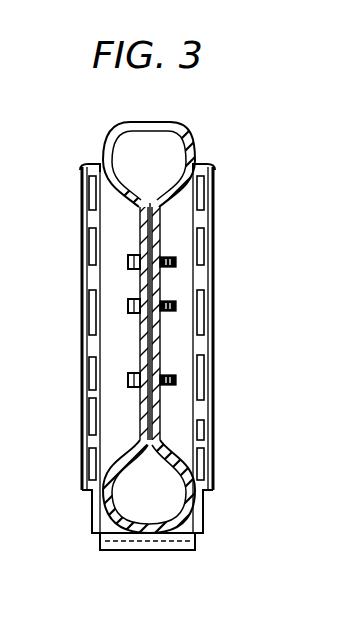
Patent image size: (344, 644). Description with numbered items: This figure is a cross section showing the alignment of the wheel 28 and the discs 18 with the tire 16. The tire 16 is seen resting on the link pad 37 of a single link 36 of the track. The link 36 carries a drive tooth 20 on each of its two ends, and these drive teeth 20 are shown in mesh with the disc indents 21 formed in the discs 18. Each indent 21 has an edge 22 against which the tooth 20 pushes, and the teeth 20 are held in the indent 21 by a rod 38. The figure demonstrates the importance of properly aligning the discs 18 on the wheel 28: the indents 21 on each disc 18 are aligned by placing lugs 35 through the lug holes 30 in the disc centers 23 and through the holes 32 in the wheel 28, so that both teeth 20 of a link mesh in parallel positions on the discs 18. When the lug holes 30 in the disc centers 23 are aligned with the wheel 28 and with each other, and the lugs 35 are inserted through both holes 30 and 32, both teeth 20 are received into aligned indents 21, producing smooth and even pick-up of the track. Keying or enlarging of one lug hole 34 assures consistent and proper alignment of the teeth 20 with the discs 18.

The tire 16 is at (129, 122).
The disc 18 is at (80, 379).
The drive tooth 20 is at (94, 512).
The disc indent 21 is at (88, 318).
The indent edge 22 is at (205, 255).
The disc center 23 is at (140, 283).
The wheel 28 is at (150, 200).
The lug hole 30 is at (140, 238).
The lug hole 32 is at (172, 268).
The lug hole 34 is at (128, 262).
The lug 35 is at (132, 378).
The link 36 is at (101, 548).
The link pad 37 is at (176, 550).
The rod 38 is at (82, 181).